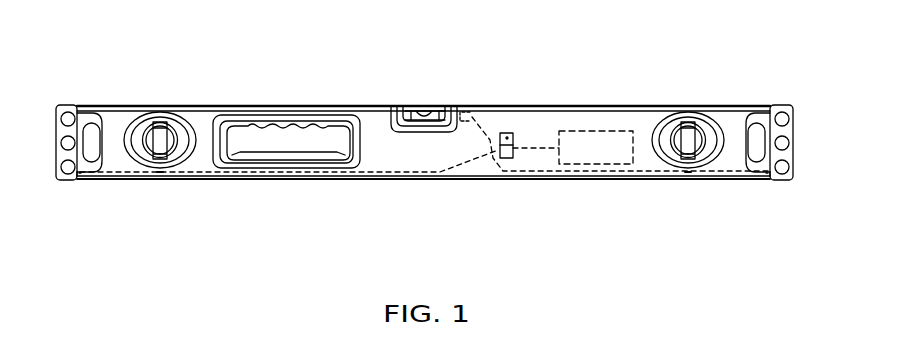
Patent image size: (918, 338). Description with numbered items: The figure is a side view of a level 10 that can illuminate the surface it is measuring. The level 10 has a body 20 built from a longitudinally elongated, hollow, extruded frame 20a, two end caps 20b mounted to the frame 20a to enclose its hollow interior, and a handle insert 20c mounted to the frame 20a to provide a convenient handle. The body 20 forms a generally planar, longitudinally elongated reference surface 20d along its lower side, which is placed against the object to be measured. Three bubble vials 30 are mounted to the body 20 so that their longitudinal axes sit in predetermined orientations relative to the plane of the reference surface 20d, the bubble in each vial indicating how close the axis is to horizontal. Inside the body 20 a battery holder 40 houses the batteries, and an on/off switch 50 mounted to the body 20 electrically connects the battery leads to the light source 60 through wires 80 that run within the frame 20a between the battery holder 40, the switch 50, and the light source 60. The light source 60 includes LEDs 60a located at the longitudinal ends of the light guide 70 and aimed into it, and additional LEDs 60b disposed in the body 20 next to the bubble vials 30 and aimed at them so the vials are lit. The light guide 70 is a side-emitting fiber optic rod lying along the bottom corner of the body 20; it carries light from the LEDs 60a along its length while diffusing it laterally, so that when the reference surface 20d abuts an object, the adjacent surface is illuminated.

The level 10 is at (268, 192).
The body 20 is at (423, 113).
The frame 20a is at (373, 125).
The end caps 20b is at (69, 104).
The handle insert 20c is at (300, 125).
The reference surface 20d is at (203, 189).
The bubble vials 30 is at (172, 142).
The battery holder 40 is at (598, 130).
The on/off switch 50 is at (505, 132).
The light source 60 is at (428, 133).
The light emitting diode 60a is at (80, 180).
The LEDs 60b is at (160, 179).
The light guide 70 is at (512, 180).
The wires 80 is at (438, 174).